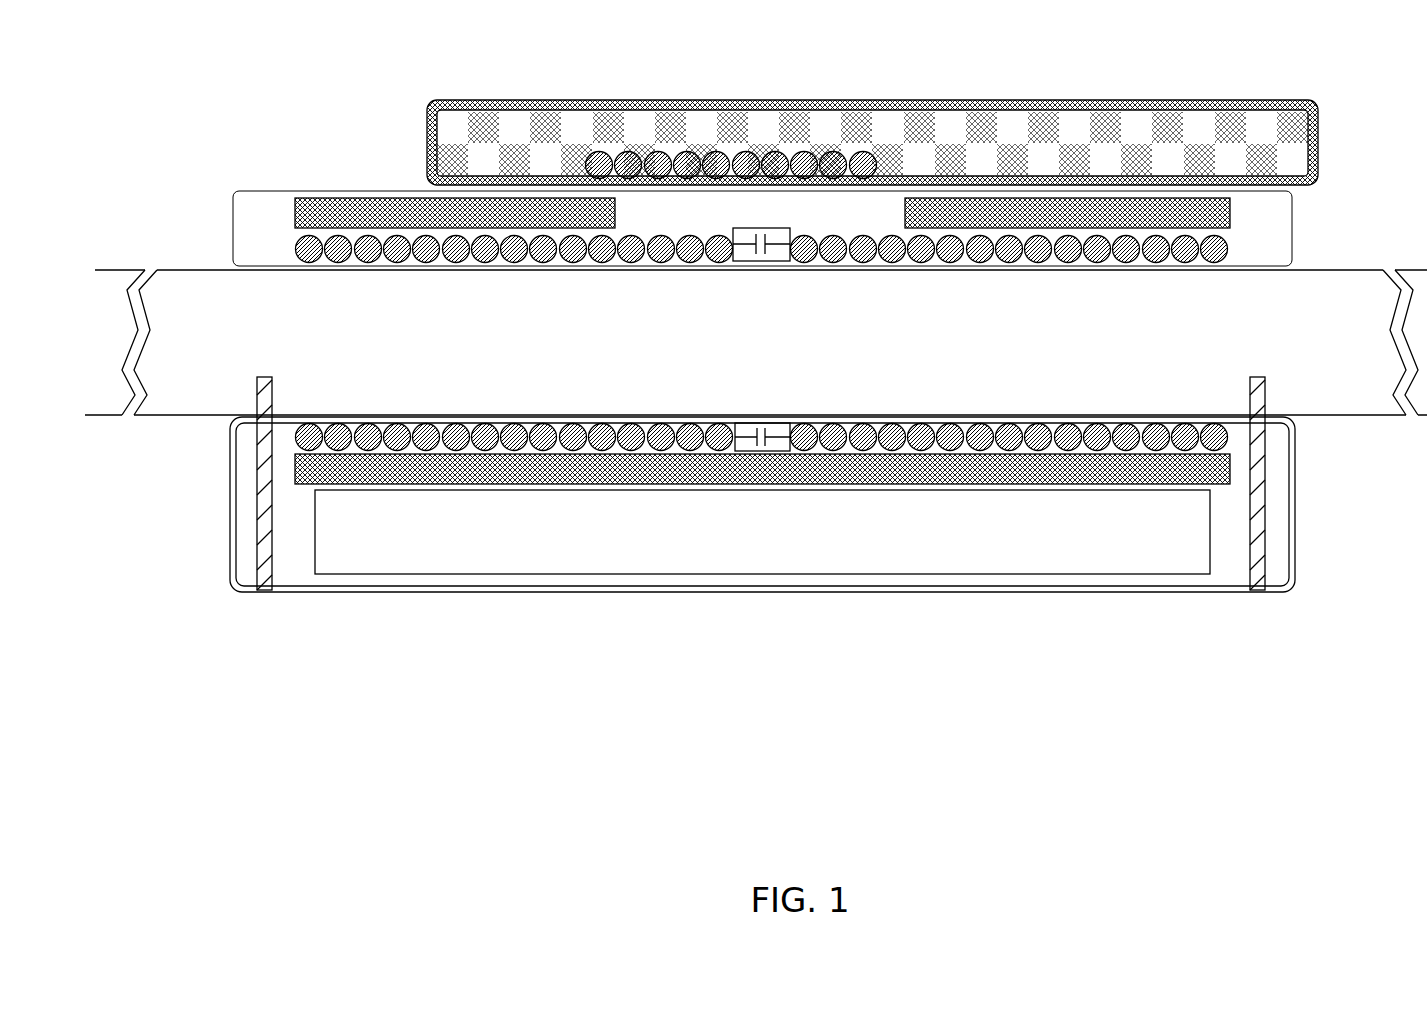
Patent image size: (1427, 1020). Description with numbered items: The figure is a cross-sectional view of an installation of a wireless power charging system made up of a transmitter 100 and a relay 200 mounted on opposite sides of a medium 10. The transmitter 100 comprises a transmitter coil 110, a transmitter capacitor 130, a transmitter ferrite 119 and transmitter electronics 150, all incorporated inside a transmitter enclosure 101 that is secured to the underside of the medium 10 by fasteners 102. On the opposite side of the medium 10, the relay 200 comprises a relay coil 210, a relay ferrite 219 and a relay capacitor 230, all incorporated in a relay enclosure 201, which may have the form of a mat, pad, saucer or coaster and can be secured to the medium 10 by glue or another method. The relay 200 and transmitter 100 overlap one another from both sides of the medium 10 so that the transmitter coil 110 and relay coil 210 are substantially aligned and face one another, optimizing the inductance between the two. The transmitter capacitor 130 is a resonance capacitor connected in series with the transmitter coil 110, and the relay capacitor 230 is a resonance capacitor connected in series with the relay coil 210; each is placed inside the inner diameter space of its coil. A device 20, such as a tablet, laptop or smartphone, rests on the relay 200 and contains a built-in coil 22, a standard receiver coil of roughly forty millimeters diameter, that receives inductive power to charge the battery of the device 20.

The medium 10 is at (157, 425).
The device 20 is at (647, 100).
The built-in coil 22 is at (797, 152).
The transmitter 100 is at (740, 504).
The transmitter enclosure 101 is at (228, 528).
The fasteners 102 is at (290, 610).
The transmitter coil 110 is at (645, 420).
The transmitter ferrite 119 is at (1230, 476).
The transmitter capacitor 130 is at (782, 420).
The transmitter electronics 150 is at (545, 612).
The relay 200 is at (712, 224).
The relay enclosure 201 is at (330, 184).
The relay coil 210 is at (492, 270).
The relay ferrite 219 is at (400, 192).
The relay capacitor 230 is at (762, 270).